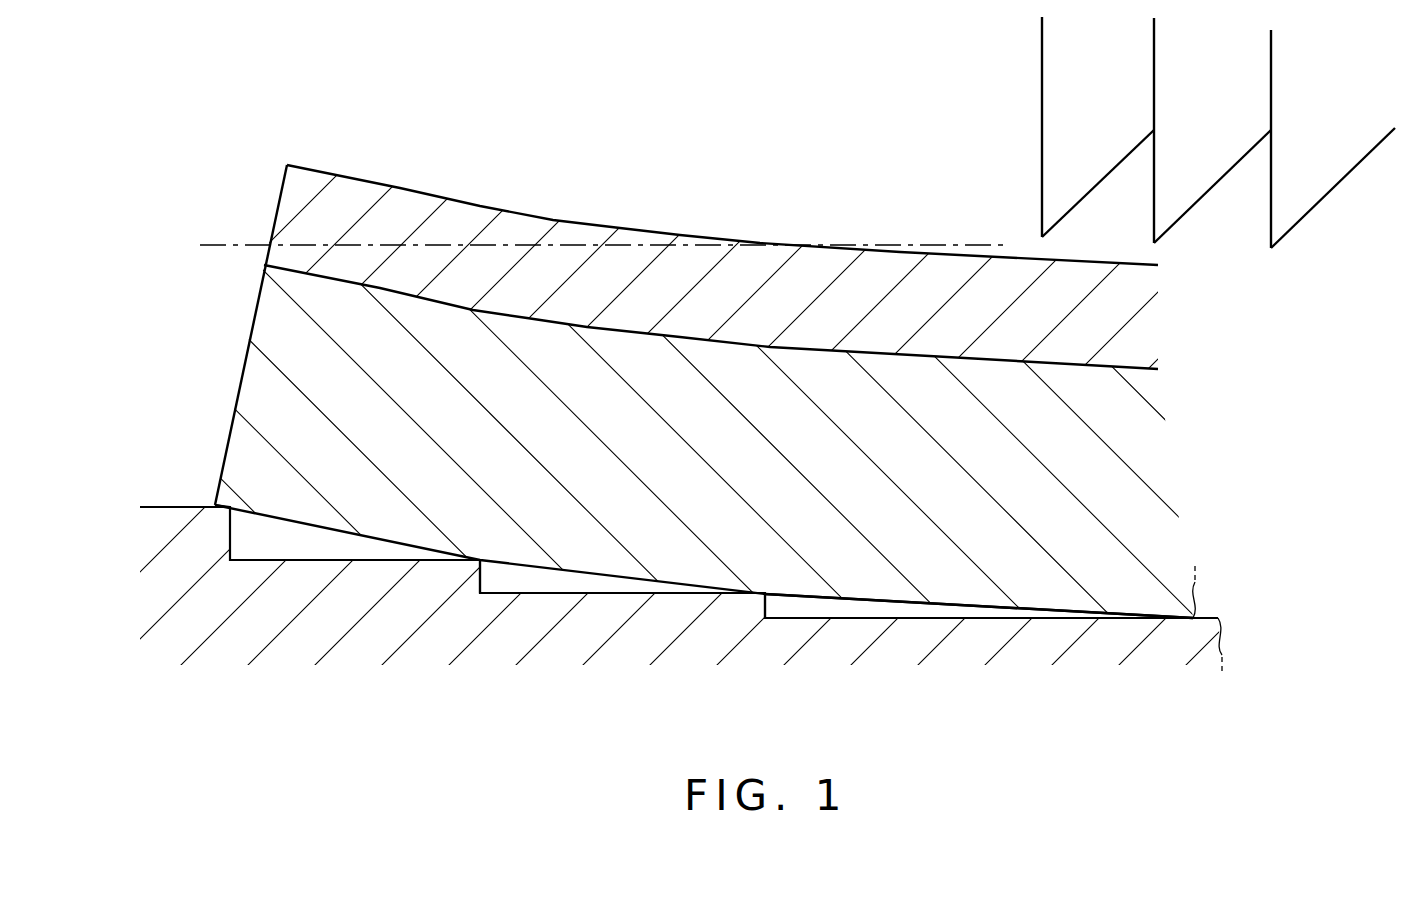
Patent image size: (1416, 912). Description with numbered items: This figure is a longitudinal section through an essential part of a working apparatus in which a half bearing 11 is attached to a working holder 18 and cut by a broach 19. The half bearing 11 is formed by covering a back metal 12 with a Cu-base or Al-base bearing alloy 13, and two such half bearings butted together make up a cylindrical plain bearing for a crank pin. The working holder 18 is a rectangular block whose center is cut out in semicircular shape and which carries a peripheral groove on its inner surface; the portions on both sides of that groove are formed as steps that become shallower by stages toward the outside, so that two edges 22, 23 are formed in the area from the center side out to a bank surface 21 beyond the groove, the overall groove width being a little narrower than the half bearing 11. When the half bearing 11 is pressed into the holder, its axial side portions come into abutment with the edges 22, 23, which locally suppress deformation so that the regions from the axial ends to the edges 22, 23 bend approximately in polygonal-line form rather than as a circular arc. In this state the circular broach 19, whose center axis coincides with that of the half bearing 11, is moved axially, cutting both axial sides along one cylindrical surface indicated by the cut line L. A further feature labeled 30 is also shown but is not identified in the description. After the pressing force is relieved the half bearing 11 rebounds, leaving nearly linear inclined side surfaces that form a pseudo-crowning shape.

The half bearing 11 is at (442, 173).
The back metal 12 is at (243, 428).
The bearing alloy 13 is at (362, 190).
The working holder 18 is at (140, 516).
The broach 19 is at (1042, 100).
The bank surface 21 is at (195, 507).
The edge 22 is at (767, 597).
The edge 23 is at (483, 560).
The gap 30 is at (868, 617).
The cut line L is at (920, 245).